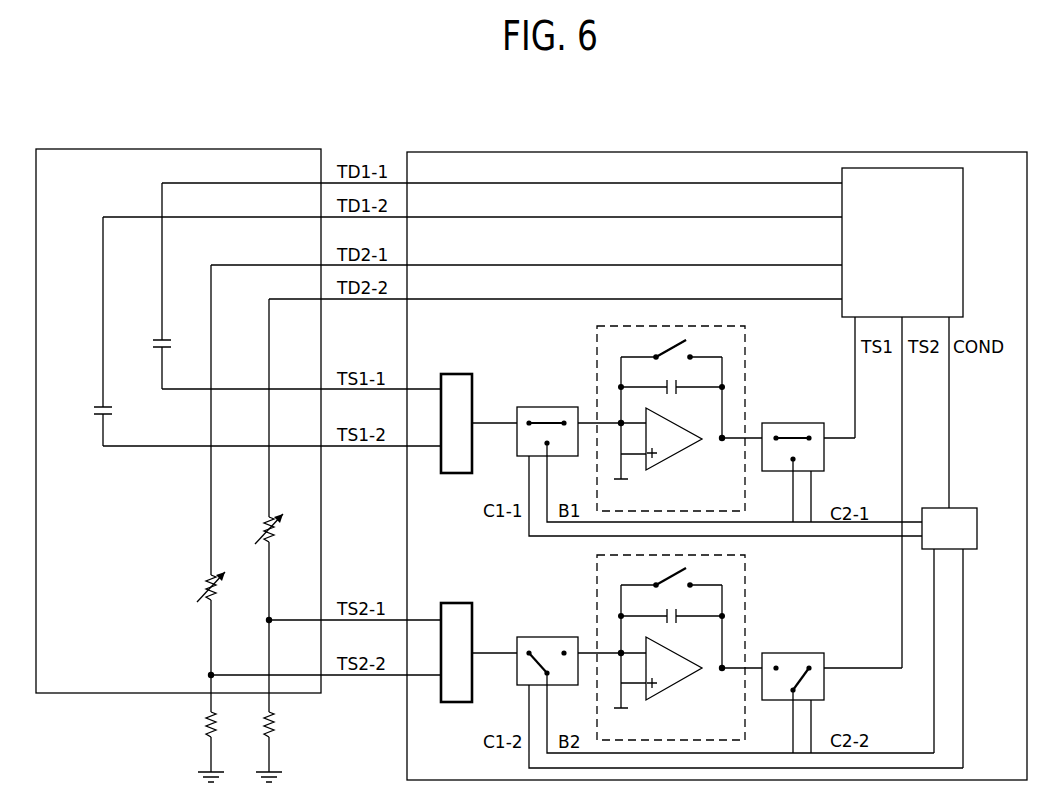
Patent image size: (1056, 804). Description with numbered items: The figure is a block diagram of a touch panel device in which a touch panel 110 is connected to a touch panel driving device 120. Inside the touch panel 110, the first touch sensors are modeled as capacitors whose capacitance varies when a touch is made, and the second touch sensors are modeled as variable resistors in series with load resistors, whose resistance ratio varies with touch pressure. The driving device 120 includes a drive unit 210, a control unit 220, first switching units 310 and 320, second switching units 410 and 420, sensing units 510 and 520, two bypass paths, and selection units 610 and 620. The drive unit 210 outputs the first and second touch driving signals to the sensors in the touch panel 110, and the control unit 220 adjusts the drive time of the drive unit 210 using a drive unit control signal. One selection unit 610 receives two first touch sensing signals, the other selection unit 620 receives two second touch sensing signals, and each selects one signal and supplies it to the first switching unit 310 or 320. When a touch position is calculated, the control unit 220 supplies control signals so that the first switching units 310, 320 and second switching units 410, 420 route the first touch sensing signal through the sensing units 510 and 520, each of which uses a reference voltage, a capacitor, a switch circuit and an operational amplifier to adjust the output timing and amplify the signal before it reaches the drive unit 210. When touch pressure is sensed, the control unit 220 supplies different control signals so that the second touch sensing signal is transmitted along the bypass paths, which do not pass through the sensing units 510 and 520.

The touch panel 110 is at (276, 148).
The touch panel driving device 120 is at (588, 150).
The drive unit 210 is at (935, 166).
The control unit 220 is at (968, 506).
The first switching unit 310 is at (527, 405).
The first switching unit 320 is at (527, 635).
The second switching unit 410 is at (793, 421).
The second switching unit 420 is at (793, 651).
The sensing unit 510 is at (745, 348).
The sensing unit 520 is at (745, 577).
The selection unit 610 is at (457, 372).
The selection unit 620 is at (457, 601).